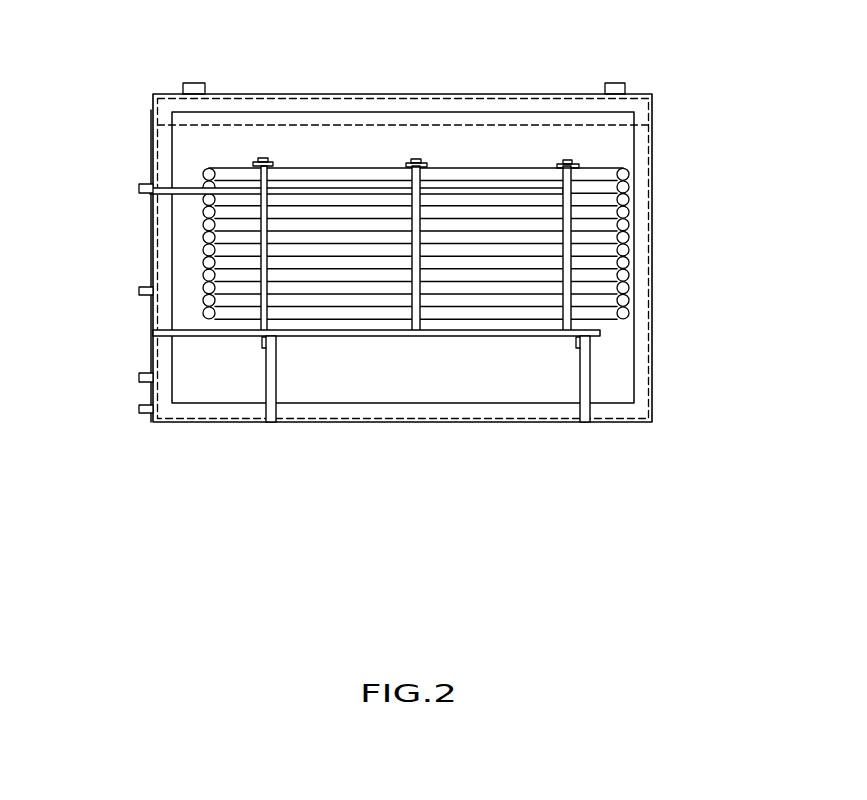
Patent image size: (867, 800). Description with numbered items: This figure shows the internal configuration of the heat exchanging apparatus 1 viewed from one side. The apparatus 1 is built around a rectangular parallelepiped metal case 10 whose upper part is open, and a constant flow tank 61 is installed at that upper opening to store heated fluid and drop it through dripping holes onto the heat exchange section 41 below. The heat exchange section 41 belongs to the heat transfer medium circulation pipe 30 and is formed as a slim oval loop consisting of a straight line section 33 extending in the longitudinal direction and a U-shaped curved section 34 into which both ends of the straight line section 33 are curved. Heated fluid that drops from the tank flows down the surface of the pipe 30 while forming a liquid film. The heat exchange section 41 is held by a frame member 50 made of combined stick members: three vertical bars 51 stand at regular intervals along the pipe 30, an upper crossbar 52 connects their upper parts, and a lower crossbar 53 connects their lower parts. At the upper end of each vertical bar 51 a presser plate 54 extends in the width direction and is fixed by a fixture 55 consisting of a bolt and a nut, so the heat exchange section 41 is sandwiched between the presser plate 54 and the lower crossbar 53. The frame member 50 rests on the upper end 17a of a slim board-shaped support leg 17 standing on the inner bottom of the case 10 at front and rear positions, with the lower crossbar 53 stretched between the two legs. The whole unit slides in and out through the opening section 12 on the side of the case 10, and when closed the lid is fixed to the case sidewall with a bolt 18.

The heat exchanging apparatus 1 is at (127, 127).
The case 10 is at (656, 122).
The opening section 12 is at (156, 127).
The support leg 17 is at (280, 390).
The upper end of support leg 17a is at (272, 337).
The bolt 18 is at (139, 188).
The heat transfer medium circulation pipe 30 is at (341, 167).
The straight line section 33 is at (370, 174).
The curved section 34 is at (629, 216).
The heat exchange section 41 is at (488, 167).
The frame member 50 is at (473, 96).
The vertical bar 51 is at (264, 176).
The upper crossbar 52 is at (527, 193).
The lower crossbar 53 is at (535, 333).
The presser plate 54 is at (578, 168).
The fixture 55 is at (574, 165).
The constant flow tank 61 is at (238, 120).